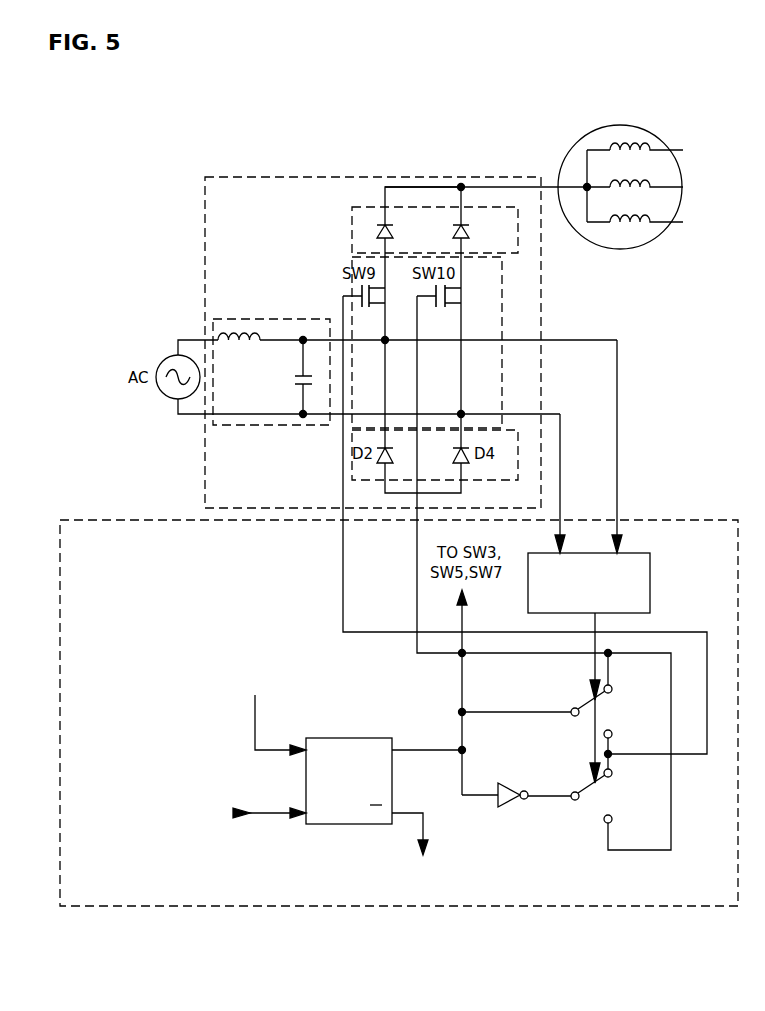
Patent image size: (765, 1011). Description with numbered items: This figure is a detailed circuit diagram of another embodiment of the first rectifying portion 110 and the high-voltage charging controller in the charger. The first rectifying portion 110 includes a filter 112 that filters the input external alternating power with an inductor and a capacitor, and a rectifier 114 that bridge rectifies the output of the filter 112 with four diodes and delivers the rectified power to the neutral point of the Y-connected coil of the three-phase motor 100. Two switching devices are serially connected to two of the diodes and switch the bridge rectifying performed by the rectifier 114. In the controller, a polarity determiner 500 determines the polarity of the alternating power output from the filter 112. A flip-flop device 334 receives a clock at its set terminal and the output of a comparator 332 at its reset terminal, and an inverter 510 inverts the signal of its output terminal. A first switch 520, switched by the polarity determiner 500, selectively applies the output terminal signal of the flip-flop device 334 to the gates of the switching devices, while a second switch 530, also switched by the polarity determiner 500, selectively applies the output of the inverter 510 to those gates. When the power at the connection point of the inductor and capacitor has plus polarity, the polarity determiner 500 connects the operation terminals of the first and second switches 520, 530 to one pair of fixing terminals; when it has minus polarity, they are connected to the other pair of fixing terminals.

The 3-phase motor 100 is at (620, 125).
The first rectifying portion 110 is at (205, 300).
The filter 112 is at (272, 428).
The rectifier 114 is at (352, 212).
The comparator 332 is at (190, 801).
The flip-flop device 334 is at (352, 826).
The polarity determiner 500 is at (650, 583).
The inverter 510 is at (517, 805).
The first switch 520 is at (570, 708).
The second switch 530 is at (576, 805).